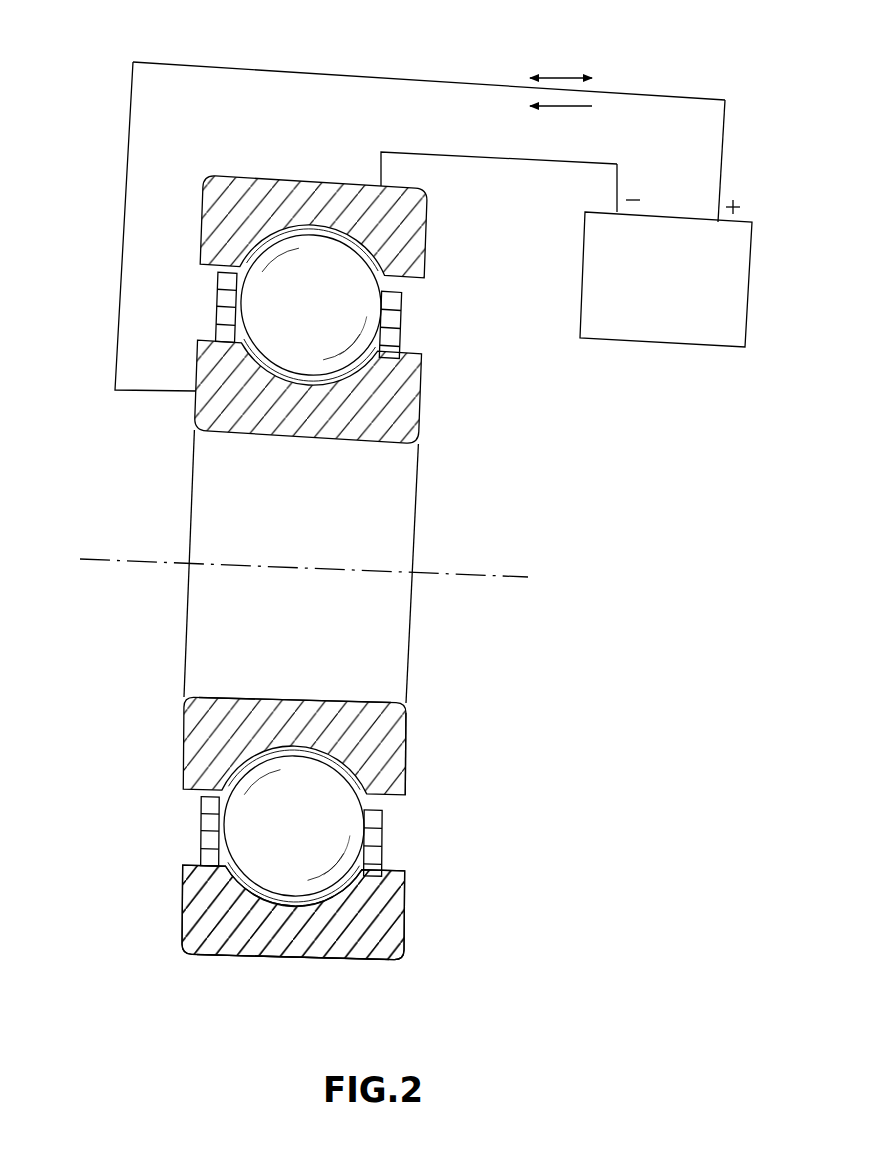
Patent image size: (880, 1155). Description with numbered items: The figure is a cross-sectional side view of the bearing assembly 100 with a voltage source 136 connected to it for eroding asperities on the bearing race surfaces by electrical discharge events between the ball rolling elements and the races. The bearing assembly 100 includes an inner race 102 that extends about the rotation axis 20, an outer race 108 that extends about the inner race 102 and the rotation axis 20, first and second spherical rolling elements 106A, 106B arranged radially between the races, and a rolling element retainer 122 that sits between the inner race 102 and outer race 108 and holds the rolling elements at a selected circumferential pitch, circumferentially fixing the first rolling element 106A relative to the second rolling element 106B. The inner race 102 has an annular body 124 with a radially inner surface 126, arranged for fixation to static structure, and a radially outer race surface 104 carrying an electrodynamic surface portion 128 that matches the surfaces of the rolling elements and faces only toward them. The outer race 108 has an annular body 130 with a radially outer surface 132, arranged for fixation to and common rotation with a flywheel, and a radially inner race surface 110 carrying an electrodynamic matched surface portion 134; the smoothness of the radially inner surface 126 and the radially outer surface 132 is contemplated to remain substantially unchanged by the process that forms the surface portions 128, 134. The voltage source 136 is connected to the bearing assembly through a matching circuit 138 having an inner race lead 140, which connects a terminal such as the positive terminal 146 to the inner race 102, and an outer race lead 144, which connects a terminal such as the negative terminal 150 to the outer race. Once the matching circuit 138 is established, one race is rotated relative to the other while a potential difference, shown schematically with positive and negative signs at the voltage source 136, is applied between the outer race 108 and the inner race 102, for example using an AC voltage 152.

The rotation axis 20 is at (514, 575).
The bearing assembly 100 is at (69, 827).
The inner race 102 is at (388, 776).
The radially outer race surface 104 is at (256, 774).
The first spherical rolling element 106A is at (284, 342).
The second spherical rolling element 106B is at (240, 835).
The outer race 108 is at (382, 908).
The radially inner race surface 110 is at (224, 880).
The rolling element retainer 122 is at (380, 822).
The annular body 124 is at (417, 490).
The radially inner surface 126 is at (290, 694).
The electrodynamic surface portion 128 is at (386, 728).
The annular body 130 is at (272, 184).
The radially outer surface 132 is at (370, 968).
The electrodynamic matched surface portion 134 is at (306, 916).
The voltage source 136 is at (655, 347).
The matching circuit 138 is at (100, 190).
The inner race lead 140 is at (140, 393).
The outer race lead 144 is at (444, 155).
The positive terminal 146 is at (721, 175).
The negative terminal 150 is at (619, 178).
The AC voltage 152 is at (558, 76).